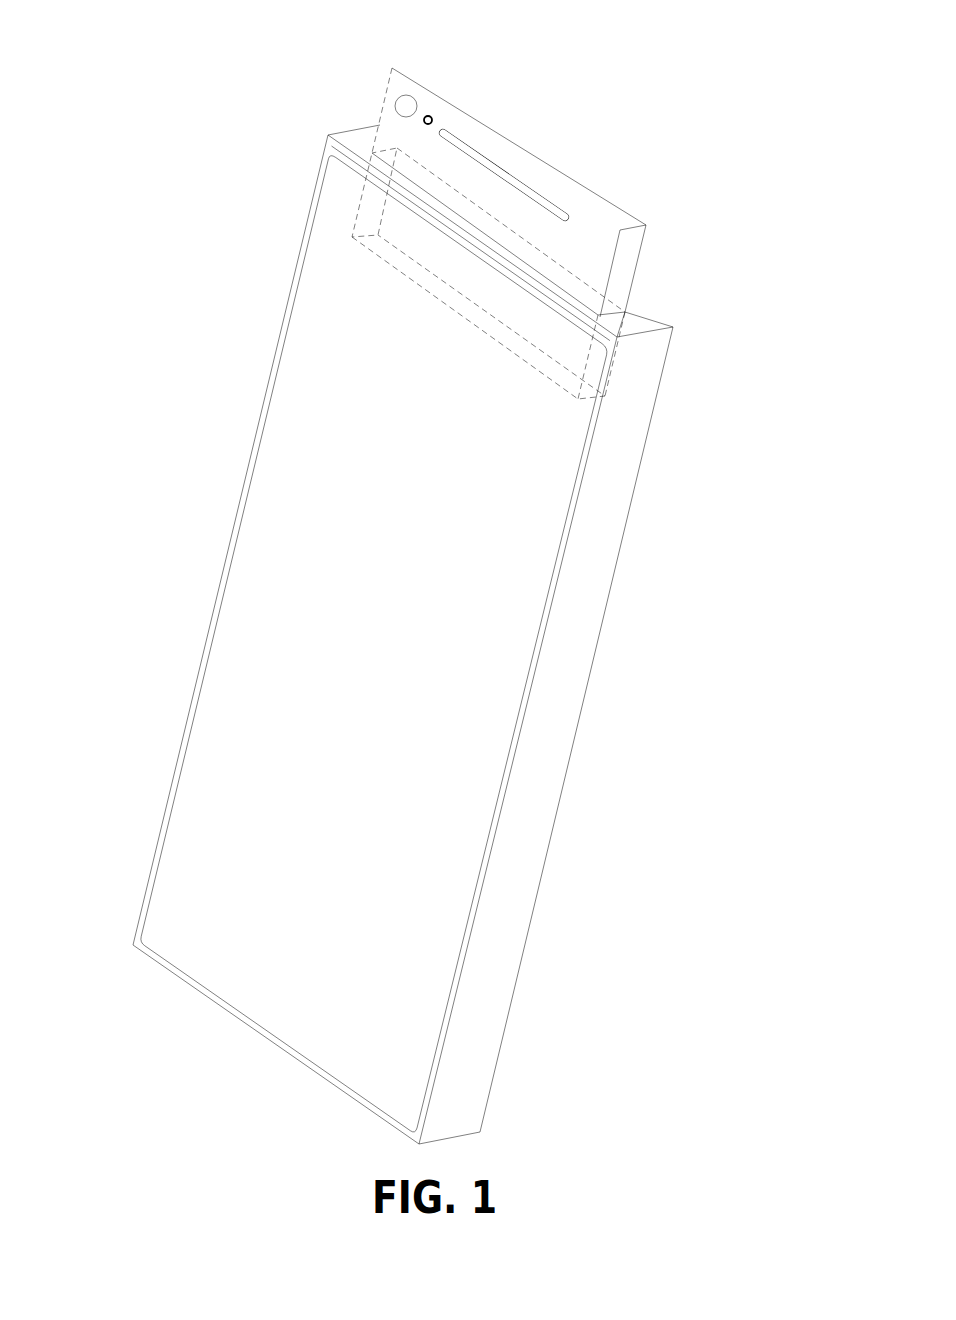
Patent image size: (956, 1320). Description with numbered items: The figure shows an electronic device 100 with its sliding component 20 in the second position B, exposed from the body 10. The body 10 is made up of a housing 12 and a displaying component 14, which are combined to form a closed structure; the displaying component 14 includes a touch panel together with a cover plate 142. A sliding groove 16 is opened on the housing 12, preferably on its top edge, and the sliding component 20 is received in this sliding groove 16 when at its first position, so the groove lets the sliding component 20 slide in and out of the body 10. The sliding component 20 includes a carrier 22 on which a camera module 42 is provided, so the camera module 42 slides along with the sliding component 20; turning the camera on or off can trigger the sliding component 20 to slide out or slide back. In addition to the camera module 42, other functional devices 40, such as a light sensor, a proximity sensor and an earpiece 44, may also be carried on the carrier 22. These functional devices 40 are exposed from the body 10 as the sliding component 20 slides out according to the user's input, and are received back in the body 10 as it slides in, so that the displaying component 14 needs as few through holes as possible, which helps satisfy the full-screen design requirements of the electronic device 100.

The electronic device 100 is at (434, 583).
The body 10 is at (448, 634).
The housing 12 is at (538, 735).
The displaying component 14 is at (210, 510).
The cover plate 142 is at (295, 438).
The sliding groove 16 is at (366, 205).
The sliding component 20 is at (532, 170).
The carrier 22 is at (580, 220).
The functional devices 40 is at (433, 114).
The camera module 42 is at (408, 94).
The earpiece 44 is at (473, 152).
The second position B is at (652, 225).